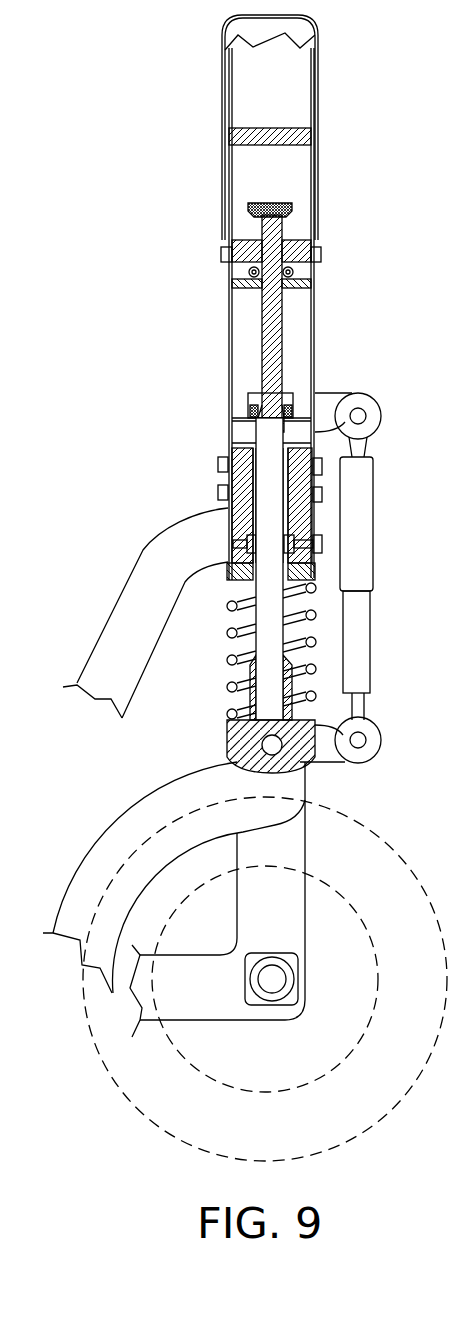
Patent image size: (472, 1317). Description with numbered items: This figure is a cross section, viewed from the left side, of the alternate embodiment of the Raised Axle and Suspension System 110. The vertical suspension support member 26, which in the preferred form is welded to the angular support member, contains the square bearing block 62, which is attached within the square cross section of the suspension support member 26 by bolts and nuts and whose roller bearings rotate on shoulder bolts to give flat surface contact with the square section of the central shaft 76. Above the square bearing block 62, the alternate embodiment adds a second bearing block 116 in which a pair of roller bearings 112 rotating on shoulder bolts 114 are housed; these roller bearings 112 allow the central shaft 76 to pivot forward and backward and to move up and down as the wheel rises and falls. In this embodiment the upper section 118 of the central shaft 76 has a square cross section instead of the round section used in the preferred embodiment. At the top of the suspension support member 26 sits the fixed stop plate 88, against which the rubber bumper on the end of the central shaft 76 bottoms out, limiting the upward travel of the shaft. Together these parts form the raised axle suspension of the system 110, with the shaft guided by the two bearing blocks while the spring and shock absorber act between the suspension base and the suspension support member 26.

The Raised Axle and Suspension System 110 is at (202, 173).
The fixed stop plate 88 is at (280, 128).
The suspension support member 26 is at (227, 400).
The second bearing block 116 is at (243, 238).
The upper section 118 is at (283, 362).
The roller bearings 112 is at (225, 262).
The shoulder bolts 114 is at (250, 288).
The central shaft 76 is at (260, 372).
The square bearing block 62 is at (220, 483).